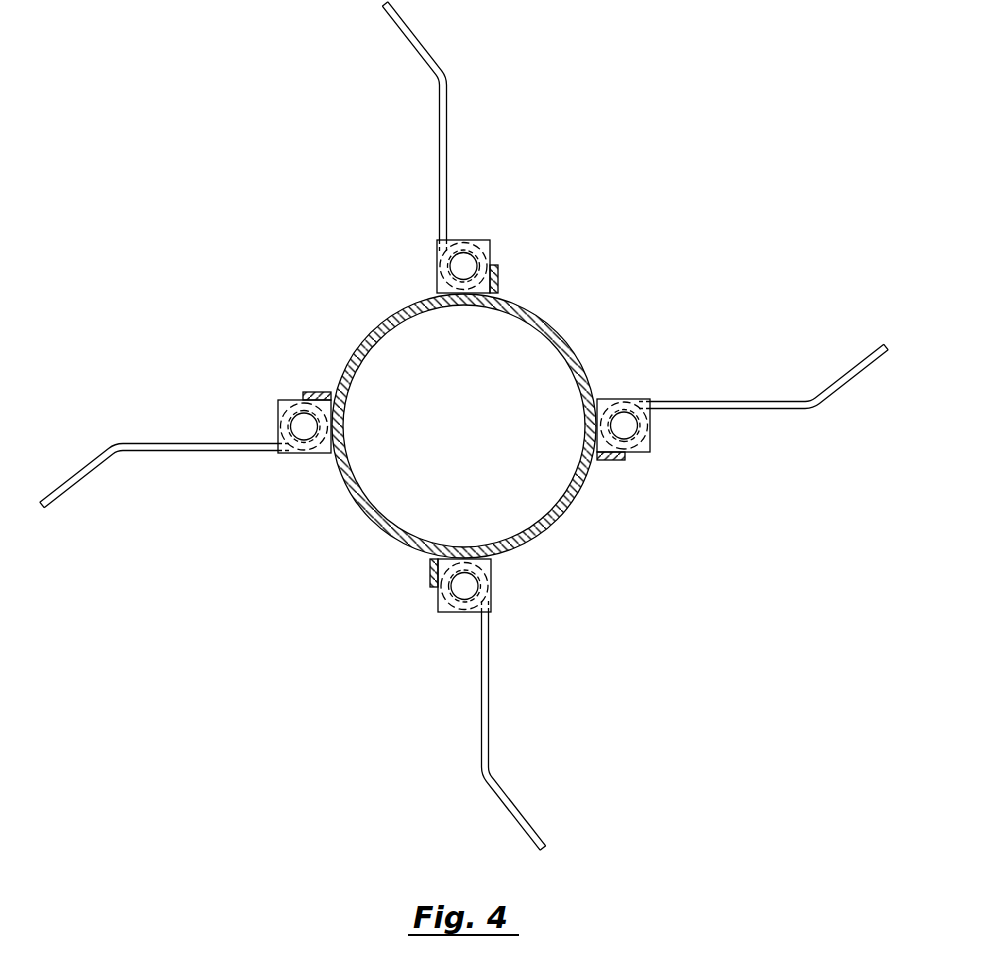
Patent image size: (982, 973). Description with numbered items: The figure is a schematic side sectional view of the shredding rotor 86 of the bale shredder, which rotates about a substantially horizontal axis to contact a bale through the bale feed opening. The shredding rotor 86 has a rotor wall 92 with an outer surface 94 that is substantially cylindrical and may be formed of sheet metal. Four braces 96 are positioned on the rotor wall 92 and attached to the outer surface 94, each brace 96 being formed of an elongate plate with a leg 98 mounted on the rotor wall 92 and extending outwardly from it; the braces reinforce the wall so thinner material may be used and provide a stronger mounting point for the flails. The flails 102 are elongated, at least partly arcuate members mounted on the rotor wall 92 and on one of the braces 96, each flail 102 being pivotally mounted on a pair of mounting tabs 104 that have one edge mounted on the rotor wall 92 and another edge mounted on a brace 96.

The shredding rotor 86 is at (464, 426).
The rotor wall 92 is at (487, 426).
The outer surface 94 is at (563, 508).
The brace 96 is at (464, 396).
The leg 98 is at (627, 272).
The flail 102 is at (447, 80).
The mounting tab 104 is at (498, 252).